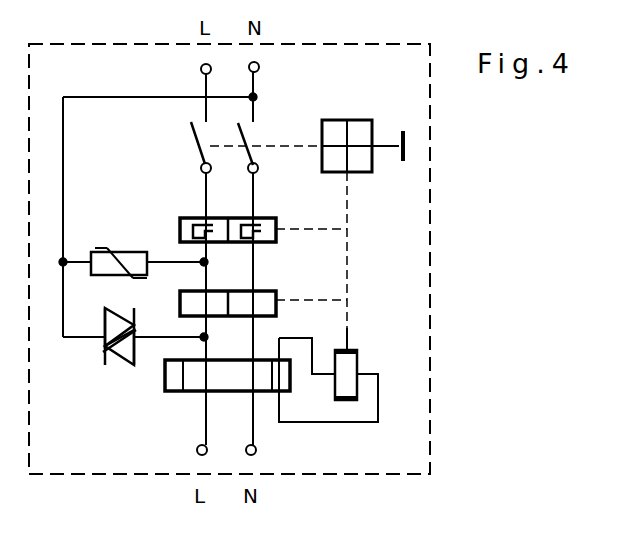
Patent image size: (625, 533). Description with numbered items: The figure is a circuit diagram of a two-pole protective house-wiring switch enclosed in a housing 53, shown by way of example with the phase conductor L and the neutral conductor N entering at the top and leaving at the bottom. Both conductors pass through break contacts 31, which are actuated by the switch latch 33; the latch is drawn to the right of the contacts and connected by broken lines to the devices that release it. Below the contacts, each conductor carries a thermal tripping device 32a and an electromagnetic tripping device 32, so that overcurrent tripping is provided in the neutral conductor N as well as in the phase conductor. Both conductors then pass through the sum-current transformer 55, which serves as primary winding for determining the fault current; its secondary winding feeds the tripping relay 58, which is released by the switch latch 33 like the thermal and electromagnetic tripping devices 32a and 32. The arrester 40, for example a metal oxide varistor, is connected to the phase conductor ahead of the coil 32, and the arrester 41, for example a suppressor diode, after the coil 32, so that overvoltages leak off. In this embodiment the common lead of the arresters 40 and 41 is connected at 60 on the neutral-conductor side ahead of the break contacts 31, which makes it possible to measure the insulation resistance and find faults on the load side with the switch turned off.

The break contacts 31 is at (195, 150).
The electromagnetic tripping device 32 is at (267, 291).
The thermal tripping device 32a is at (263, 218).
The switch latch 33 is at (362, 127).
The arrester 40 is at (126, 262).
The arrester 41 is at (102, 352).
The housing 53 is at (431, 165).
The sum-current transformer 55 is at (173, 373).
The tripping relay 58 is at (358, 367).
The connection point 60 is at (258, 97).